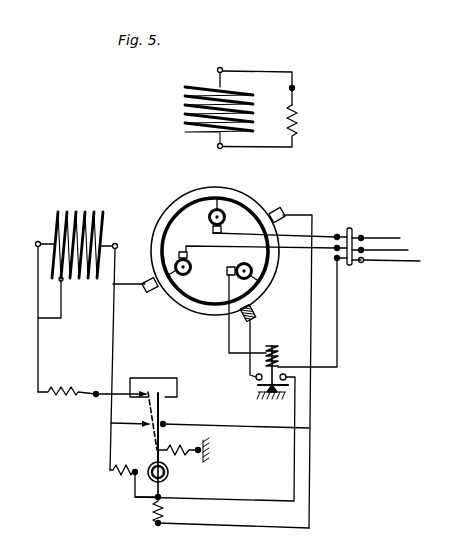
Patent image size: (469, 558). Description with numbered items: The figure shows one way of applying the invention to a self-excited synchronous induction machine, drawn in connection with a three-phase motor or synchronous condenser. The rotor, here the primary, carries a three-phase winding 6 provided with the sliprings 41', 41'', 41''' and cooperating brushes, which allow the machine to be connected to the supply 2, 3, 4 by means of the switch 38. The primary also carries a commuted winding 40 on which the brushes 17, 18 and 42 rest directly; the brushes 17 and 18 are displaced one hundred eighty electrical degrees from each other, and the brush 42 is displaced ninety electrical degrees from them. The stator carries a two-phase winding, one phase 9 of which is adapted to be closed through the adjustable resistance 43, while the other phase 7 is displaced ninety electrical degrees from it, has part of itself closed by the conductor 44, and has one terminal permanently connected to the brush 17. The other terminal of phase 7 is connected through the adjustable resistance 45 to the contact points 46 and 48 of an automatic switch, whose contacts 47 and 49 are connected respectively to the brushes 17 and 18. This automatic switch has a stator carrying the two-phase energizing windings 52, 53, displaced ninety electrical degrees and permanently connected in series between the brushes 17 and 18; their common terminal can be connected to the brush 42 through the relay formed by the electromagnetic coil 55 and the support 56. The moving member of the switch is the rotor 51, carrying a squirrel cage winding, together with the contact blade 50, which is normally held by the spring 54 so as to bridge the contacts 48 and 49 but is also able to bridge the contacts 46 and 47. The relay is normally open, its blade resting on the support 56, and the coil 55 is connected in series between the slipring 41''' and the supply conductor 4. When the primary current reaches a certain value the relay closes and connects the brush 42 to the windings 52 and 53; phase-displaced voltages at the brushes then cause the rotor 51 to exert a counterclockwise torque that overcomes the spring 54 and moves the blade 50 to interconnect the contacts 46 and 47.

The supply conductor 2 is at (388, 239).
The supply conductor 3 is at (392, 252).
The supply conductor 4 is at (398, 265).
The three-phase winding 6 is at (183, 304).
The stator winding phase 7 is at (75, 244).
The stator winding phase 9 is at (209, 108).
The brush 17 is at (135, 277).
The brush 18 is at (290, 367).
The switch 38 is at (321, 297).
The commuted winding 40 is at (205, 190).
The slipring 41' is at (274, 218).
The slipring 41'' is at (251, 257).
The slipring 41''' is at (238, 303).
The brush 42 is at (244, 340).
The adjustable resistance 43 is at (298, 121).
The conductor 44 is at (62, 317).
The adjustable resistance 45 is at (66, 397).
The contact point 46 is at (140, 378).
The contact 47 is at (134, 421).
The contact point 48 is at (167, 391).
The contact 49 is at (179, 441).
The contact blade 50 is at (162, 411).
The rotor 51 is at (150, 484).
The energizing winding 52 is at (117, 478).
The energizing winding 53 is at (231, 512).
The spring 54 is at (185, 454).
The electromagnetic coil 55 is at (285, 363).
The support 56 is at (215, 437).